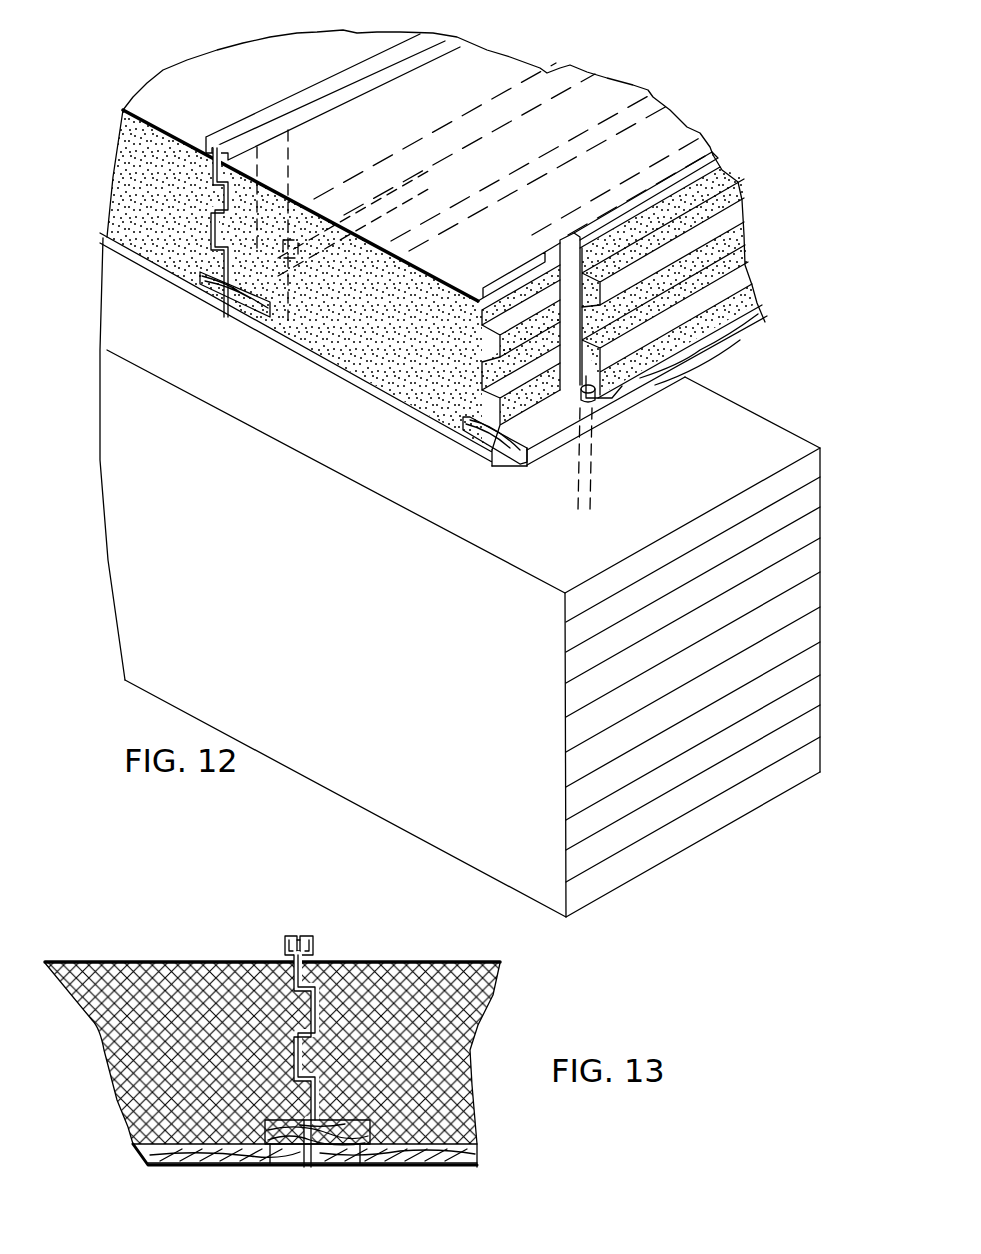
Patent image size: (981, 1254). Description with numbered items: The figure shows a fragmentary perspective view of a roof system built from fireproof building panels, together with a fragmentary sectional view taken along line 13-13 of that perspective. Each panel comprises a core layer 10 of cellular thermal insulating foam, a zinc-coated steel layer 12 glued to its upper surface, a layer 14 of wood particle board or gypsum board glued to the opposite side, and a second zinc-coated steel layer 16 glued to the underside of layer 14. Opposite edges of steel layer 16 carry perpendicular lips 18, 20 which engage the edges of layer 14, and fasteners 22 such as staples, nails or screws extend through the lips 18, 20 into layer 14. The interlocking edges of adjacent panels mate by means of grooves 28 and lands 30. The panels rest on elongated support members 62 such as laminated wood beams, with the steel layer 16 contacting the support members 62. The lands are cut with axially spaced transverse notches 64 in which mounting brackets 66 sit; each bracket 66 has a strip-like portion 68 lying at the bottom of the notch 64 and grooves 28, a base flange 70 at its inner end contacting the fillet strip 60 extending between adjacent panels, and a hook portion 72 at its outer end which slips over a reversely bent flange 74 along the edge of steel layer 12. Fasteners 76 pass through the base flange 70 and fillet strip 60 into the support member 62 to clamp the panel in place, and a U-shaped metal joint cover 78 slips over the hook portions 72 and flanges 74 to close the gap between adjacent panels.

In FIG. 12, the core layer 10 is at (418, 270).
In FIG. 13, the core layer 10 is at (160, 978).
In FIG. 12, the steel layer 12 is at (498, 248).
In FIG. 13, the steel layer 12 is at (232, 960).
In FIG. 12, the section line 13- 13 is at (338, 60).
In FIG. 12, the layer 14 is at (465, 443).
In FIG. 13, the layer 14 is at (158, 1168).
In FIG. 12, the steel layer 16 is at (392, 418).
In FIG. 13, the steel layer 16 is at (205, 1168).
In FIG. 12, the lip 18 is at (243, 322).
In FIG. 13, the lip 18 is at (313, 1170).
In FIG. 12, the lip 20 is at (500, 458).
In FIG. 13, the lip 20 is at (306, 1168).
In FIG. 13, the fasteners 22 is at (275, 1165).
In FIG. 12, the grooves 28 is at (488, 316).
In FIG. 12, the lands 30 is at (497, 350).
In FIG. 12, the fillet strip 60 is at (212, 302).
In FIG. 13, the fillet strip 60 is at (248, 1150).
In FIG. 12, the support members 62 is at (790, 440).
In FIG. 12, the transverse notches 64 is at (596, 296).
In FIG. 12, the mounting bracket 66 is at (290, 172).
In FIG. 12, the strip-like portion 68 is at (595, 317).
In FIG. 12, the base flange 70 is at (603, 382).
In FIG. 12, the hook portion 72 is at (563, 240).
In FIG. 12, the reversely bent flange 74 is at (660, 178).
In FIG. 13, the reversely bent flange 74 is at (290, 935).
In FIG. 12, the fasteners 76 is at (592, 410).
In FIG. 12, the joint cover 78 is at (428, 50).
In FIG. 13, the joint cover 78 is at (315, 950).